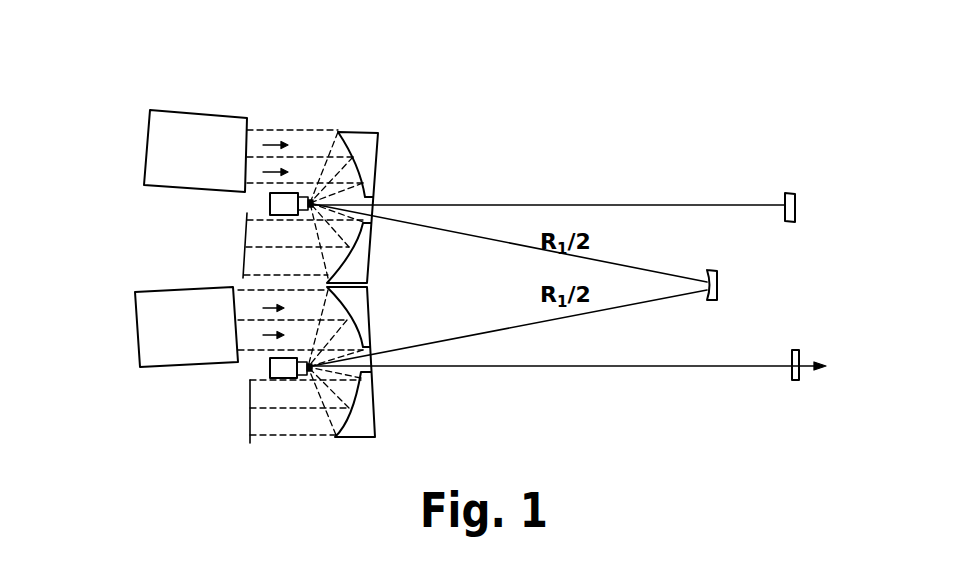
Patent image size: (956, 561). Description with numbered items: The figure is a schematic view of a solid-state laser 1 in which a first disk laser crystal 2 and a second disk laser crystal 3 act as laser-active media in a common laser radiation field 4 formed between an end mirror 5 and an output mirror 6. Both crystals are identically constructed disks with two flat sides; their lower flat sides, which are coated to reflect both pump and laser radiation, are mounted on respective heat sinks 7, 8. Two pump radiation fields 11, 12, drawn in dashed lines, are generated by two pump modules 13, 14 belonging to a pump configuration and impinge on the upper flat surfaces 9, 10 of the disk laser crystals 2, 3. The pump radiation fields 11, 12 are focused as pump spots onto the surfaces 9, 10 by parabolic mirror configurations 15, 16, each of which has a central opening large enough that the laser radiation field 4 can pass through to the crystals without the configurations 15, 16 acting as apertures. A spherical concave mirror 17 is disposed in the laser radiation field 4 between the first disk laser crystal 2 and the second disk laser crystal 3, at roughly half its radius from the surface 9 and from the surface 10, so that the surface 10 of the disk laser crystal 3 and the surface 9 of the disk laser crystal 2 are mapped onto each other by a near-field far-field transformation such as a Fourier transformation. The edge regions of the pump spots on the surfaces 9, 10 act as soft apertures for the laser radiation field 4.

The solid-state laser 1 is at (520, 96).
The first disk laser crystal 2 is at (303, 192).
The second disk laser crystal 3 is at (300, 376).
The laser radiation field 4 is at (515, 204).
The end mirror 5 is at (793, 197).
The output mirror 6 is at (795, 382).
The heat sink 7 is at (270, 202).
The heat sink 8 is at (270, 367).
The upper flat surface of the first disk laser crystal 9 is at (311, 194).
The upper flat surface of the second disk laser crystal 10 is at (308, 376).
The pump radiation field 11 is at (268, 130).
The pump radiation field 12 is at (268, 438).
The pump module 13 is at (160, 157).
The pump module 14 is at (158, 342).
The parabolic mirror configuration 15 is at (376, 152).
The parabolic mirror configuration 16 is at (376, 306).
The spherical concave mirror 17 is at (715, 275).